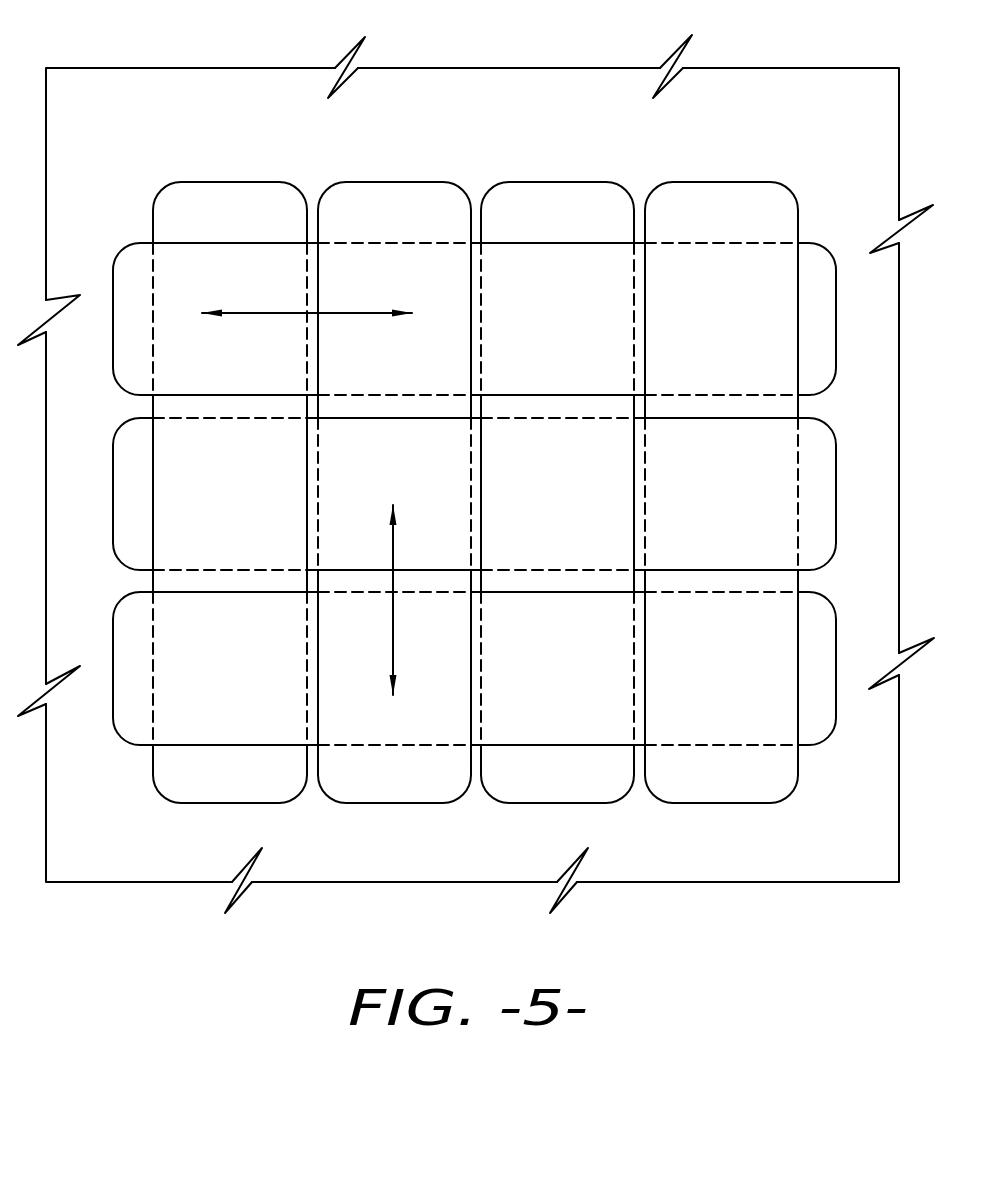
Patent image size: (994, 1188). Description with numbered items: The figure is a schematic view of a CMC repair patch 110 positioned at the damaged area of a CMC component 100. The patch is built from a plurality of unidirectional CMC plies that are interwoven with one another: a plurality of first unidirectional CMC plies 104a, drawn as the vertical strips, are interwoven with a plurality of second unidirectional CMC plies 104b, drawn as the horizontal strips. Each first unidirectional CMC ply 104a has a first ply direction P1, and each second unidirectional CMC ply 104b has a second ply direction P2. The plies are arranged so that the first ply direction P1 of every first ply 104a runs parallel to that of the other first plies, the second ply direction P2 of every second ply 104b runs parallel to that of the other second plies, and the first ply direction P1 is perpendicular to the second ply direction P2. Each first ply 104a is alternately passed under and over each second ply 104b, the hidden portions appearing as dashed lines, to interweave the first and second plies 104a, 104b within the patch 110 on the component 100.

The CMC component 100 is at (533, 108).
The CMC repair patch 110 is at (243, 155).
The first unidirectional CMC plies 104a is at (387, 200).
The second unidirectional CMC plies 104b is at (130, 275).
The first ply direction P1 is at (395, 553).
The second ply direction P2 is at (277, 315).